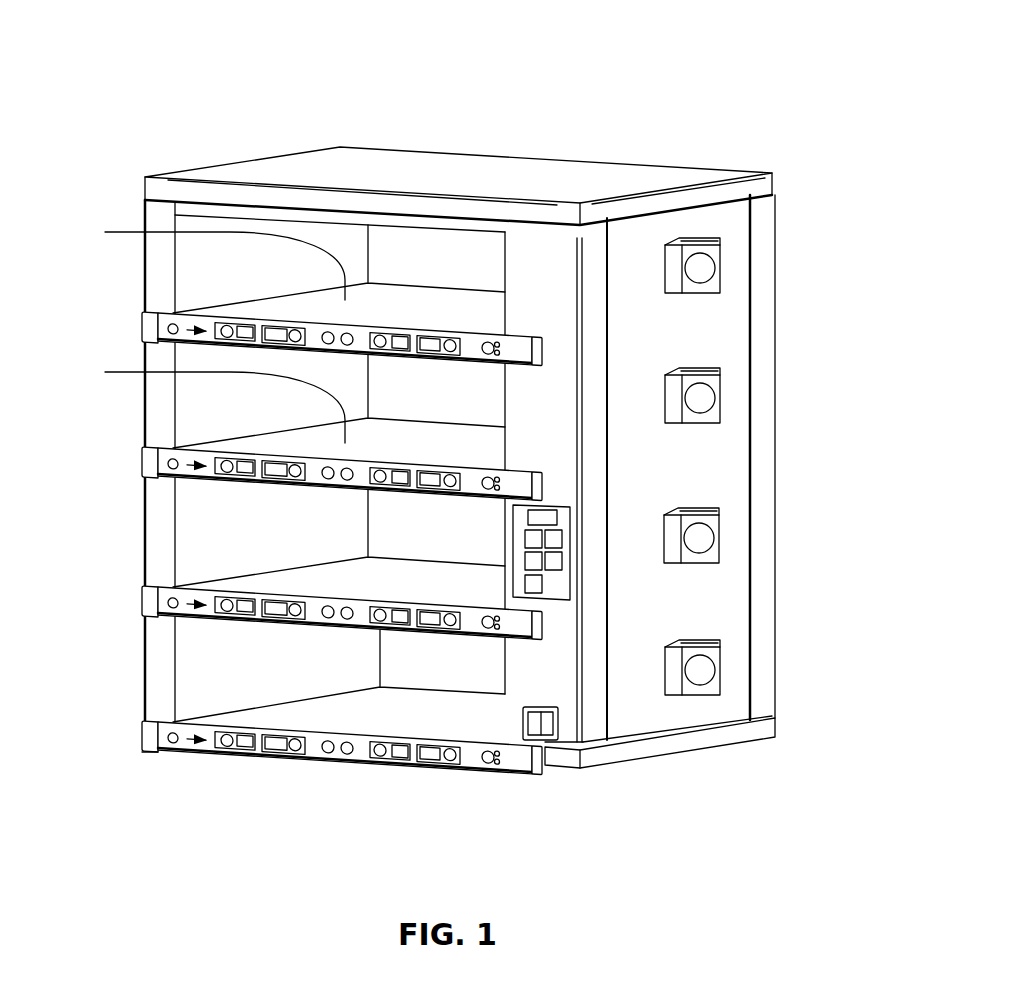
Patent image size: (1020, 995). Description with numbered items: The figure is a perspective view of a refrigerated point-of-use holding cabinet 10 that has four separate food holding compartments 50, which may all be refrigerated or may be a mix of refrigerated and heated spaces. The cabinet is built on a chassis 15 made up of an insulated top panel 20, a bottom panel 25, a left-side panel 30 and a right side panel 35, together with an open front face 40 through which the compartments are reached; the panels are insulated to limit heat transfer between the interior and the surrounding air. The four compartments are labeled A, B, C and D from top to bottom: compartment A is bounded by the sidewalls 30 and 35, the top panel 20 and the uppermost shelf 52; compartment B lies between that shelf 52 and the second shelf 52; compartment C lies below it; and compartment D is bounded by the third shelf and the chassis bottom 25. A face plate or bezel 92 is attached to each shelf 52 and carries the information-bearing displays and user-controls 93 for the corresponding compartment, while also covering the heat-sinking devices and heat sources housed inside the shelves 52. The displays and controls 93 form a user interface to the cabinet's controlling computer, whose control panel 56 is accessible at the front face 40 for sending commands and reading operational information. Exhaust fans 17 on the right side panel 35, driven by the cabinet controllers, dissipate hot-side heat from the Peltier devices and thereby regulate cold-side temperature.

The refrigerated point-of-use holding cabinet 10 is at (690, 30).
The top panel 20 is at (670, 176).
The bottom panel 25 is at (652, 758).
The left-side panel 30 is at (128, 204).
The open front face 40 is at (136, 771).
The food holding compartment 50 is at (188, 267).
The shelf 52 is at (209, 331).
The bezel 92 is at (165, 336).
The displays and user-controls 93 is at (409, 360).
The chassis 15 is at (733, 258).
The exhaust fan 17 is at (707, 397).
The control panel 56 is at (558, 587).
The right side panel 35 is at (733, 652).
The A compartment A is at (540, 279).
The B compartment B is at (540, 410).
The C compartment C is at (190, 527).
The D compartment D is at (485, 670).